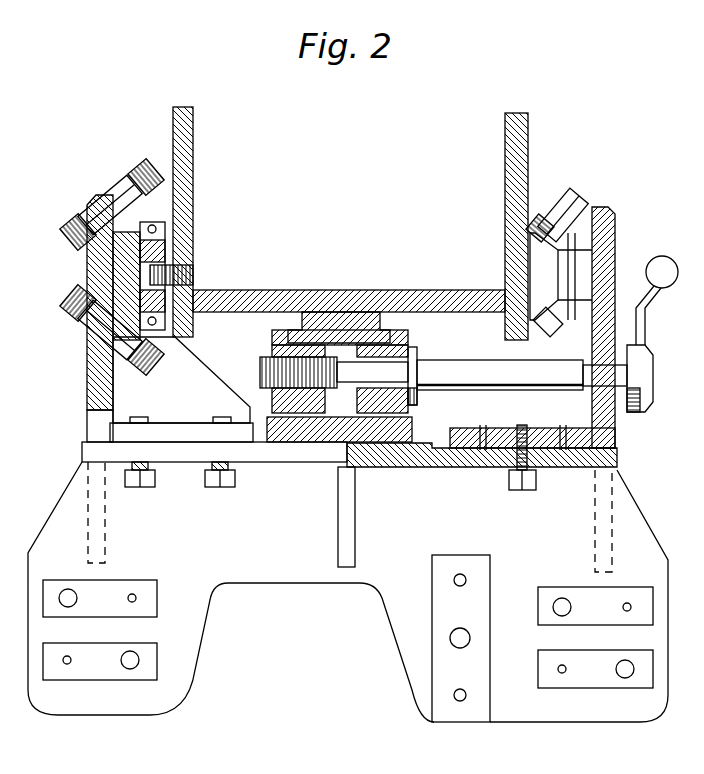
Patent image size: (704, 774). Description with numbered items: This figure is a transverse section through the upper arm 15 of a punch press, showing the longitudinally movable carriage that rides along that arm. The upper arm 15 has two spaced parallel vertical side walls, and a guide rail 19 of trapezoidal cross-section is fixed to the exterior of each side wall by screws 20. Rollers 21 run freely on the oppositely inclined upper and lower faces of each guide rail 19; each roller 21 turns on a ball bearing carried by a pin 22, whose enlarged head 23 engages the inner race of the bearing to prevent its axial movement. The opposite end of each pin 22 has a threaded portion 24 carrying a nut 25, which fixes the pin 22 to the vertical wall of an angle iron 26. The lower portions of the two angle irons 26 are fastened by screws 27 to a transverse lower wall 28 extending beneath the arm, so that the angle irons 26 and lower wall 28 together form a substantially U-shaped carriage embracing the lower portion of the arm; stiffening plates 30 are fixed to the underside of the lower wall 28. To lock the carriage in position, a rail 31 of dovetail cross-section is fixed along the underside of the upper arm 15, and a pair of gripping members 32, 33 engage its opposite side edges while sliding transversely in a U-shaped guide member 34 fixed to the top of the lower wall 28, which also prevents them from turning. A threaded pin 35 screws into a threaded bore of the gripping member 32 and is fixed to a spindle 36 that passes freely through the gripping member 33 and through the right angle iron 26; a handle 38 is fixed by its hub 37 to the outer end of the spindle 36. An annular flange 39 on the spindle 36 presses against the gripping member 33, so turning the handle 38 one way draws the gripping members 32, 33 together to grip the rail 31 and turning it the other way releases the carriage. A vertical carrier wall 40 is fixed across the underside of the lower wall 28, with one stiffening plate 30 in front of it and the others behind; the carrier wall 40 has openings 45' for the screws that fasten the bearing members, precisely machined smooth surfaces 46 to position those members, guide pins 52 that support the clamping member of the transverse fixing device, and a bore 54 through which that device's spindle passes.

The upper arm 15 is at (191, 162).
The guide rail 19 is at (165, 246).
The screw 20 is at (194, 275).
The roller 21 is at (122, 186).
The pin 22 is at (96, 200).
The enlarged head 23 is at (150, 205).
The threaded portion 24 is at (80, 312).
The nut 25 is at (80, 224).
The angle iron 26 is at (96, 378).
The screw 27 is at (212, 484).
The lower wall 28 is at (410, 467).
The stiffening plate 30 is at (100, 512).
The rail 31 is at (359, 302).
The gripping member 32 is at (276, 398).
The gripping member 33 is at (410, 398).
The guide member 34 is at (405, 428).
The threaded pin 35 is at (266, 366).
The spindle 36 is at (494, 376).
The hub 37 is at (652, 388).
The handle 38 is at (650, 296).
The annular flange 39 is at (417, 352).
The carrier wall 40 is at (630, 520).
The opening 45' is at (348, 628).
The smooth surface 46 is at (124, 592).
The guide pin 52 is at (454, 580).
The bore 54 is at (450, 636).